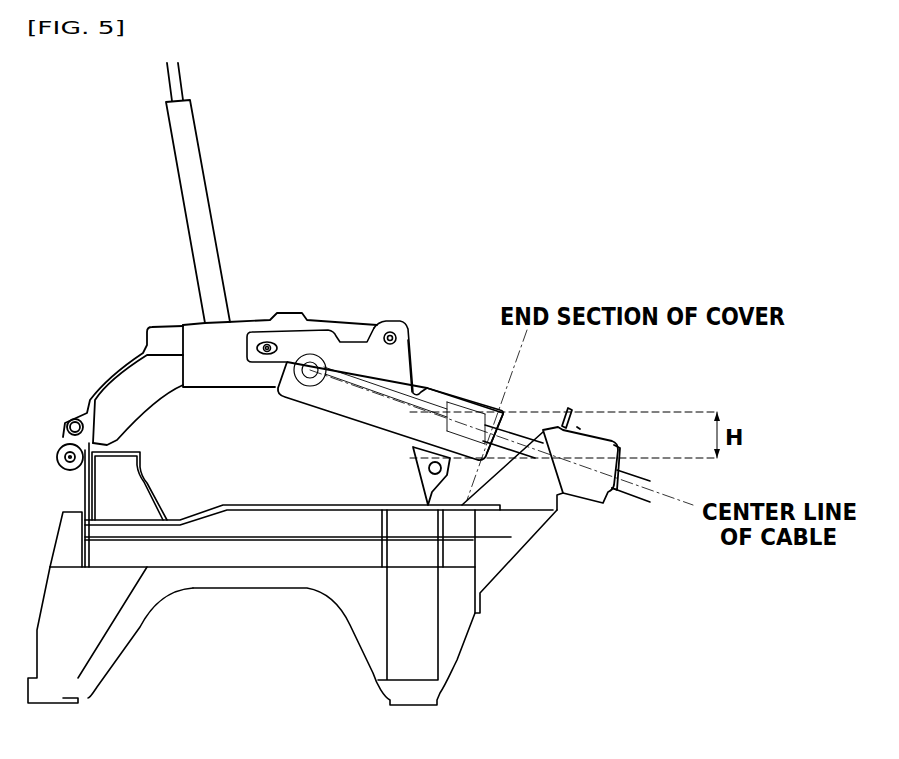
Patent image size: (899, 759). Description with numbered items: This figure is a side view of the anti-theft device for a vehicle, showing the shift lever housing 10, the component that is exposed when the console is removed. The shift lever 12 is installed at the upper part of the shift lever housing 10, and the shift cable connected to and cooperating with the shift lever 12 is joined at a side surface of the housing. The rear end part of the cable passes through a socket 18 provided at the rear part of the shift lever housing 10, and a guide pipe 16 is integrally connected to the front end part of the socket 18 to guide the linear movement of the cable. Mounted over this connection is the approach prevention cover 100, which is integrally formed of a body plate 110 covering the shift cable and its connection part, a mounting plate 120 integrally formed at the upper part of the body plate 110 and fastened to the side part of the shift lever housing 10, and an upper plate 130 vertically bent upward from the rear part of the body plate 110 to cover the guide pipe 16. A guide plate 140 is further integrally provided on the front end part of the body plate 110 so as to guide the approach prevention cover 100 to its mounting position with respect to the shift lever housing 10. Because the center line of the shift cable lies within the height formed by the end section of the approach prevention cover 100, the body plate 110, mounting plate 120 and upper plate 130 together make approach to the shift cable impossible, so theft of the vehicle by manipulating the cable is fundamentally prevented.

The shift lever housing 10 is at (284, 316).
The shift lever 12 is at (197, 173).
The guide pipe 16 is at (520, 430).
The socket 18 is at (592, 497).
The approach prevention cover 100 is at (345, 352).
The body plate 110 is at (367, 412).
The mounting plate 120 is at (378, 350).
The upper plate 130 is at (440, 388).
The guide plate 140 is at (285, 342).